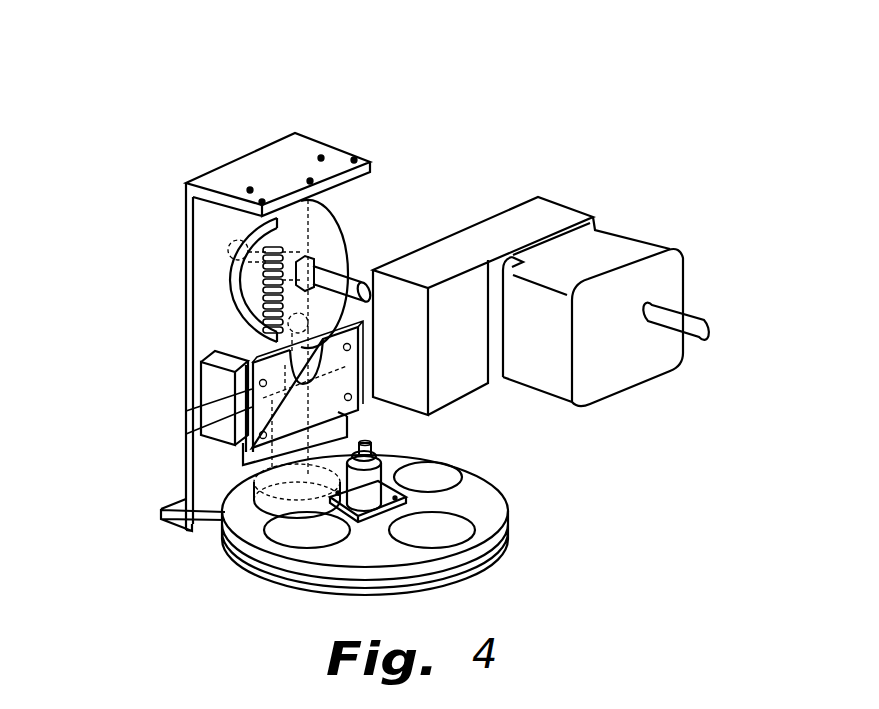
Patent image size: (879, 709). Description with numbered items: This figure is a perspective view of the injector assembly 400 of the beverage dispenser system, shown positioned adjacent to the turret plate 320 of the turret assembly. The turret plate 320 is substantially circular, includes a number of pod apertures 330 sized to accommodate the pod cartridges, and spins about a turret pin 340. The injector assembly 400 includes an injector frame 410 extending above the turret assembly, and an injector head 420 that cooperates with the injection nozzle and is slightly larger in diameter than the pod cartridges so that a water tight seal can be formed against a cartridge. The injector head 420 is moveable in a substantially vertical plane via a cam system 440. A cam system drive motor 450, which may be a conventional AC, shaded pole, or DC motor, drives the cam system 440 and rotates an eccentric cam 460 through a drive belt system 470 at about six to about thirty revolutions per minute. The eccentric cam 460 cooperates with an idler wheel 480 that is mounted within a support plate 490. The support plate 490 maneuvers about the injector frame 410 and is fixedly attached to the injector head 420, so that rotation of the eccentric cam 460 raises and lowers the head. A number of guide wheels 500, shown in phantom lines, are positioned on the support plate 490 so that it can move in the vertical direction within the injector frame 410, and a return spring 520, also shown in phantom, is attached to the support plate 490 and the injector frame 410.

The injector assembly 400 is at (188, 120).
The injector frame 410 is at (194, 355).
The return spring 520 is at (270, 228).
The eccentric cam 460 is at (227, 292).
The cam system 440 is at (342, 216).
The idler wheel 480 is at (293, 345).
The cam system drive motor 450 is at (620, 229).
The drive belt system 470 is at (706, 318).
The guide wheels 500 is at (244, 412).
The support plate 490 is at (250, 433).
The injector head 420 is at (271, 499).
The turret plate 320 is at (500, 485).
The pod apertures 330 is at (432, 477).
The turret pin 340 is at (368, 444).